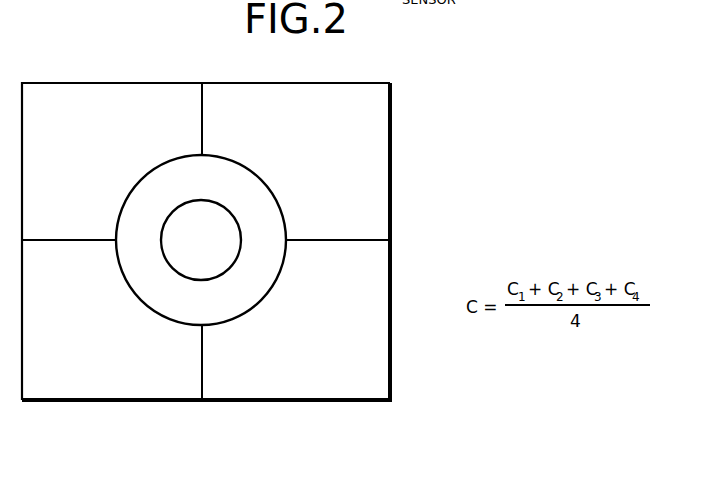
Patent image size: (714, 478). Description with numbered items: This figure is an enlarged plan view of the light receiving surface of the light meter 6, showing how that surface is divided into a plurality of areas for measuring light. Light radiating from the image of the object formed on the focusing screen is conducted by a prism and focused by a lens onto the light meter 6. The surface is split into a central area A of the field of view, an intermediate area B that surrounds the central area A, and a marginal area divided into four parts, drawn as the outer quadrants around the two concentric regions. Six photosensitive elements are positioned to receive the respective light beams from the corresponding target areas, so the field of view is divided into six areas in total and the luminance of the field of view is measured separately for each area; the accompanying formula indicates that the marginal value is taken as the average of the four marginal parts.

The light meter 6 is at (377, 100).
The central area A is at (223, 240).
The intermediate area B is at (264, 209).